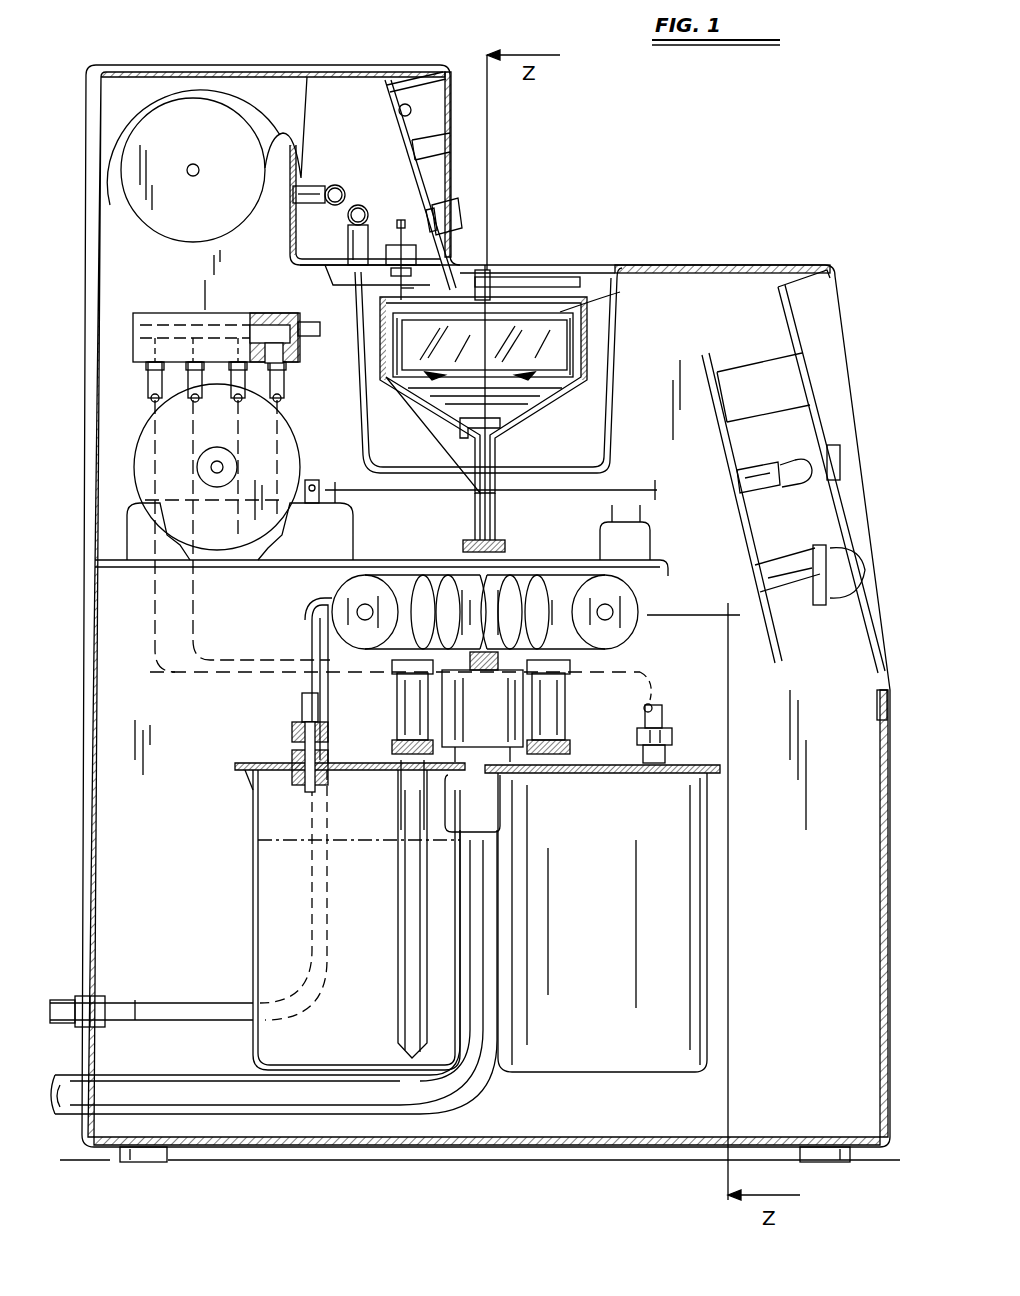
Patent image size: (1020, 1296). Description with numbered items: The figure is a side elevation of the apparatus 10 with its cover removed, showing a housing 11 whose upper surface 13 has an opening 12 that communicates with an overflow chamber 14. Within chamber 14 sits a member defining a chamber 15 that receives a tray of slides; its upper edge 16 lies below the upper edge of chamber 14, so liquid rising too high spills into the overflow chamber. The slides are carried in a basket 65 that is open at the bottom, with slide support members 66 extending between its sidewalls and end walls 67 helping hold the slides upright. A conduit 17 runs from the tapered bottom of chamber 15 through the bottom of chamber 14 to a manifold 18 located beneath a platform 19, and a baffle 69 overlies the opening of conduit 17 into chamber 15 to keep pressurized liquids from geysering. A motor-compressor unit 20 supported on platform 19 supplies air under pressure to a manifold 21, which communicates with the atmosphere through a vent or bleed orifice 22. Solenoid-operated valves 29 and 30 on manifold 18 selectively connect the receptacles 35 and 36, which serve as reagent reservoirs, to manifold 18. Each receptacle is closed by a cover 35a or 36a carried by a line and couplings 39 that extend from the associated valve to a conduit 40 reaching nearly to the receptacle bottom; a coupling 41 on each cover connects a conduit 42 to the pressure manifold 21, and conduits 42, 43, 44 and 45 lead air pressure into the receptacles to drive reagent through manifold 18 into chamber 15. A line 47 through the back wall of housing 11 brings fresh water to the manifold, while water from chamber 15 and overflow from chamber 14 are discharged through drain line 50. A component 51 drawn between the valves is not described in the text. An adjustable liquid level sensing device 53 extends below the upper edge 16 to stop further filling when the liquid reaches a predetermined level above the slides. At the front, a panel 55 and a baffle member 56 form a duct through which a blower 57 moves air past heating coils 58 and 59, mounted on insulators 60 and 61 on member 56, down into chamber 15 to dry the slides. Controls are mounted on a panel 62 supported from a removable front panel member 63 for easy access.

The apparatus 10 is at (662, 212).
The housing 11 is at (878, 860).
The opening 12 is at (592, 268).
The upper surface 13 is at (724, 266).
The overflow chamber 14 is at (603, 332).
The chamber 15 is at (545, 393).
The upper edge 16 is at (606, 296).
The conduit 17 is at (497, 462).
The manifold 18 is at (505, 556).
The platform 19 is at (392, 558).
The motor-compressor unit 20 is at (290, 447).
The manifold 21 is at (152, 315).
The vent or bleed orifice 22 is at (318, 335).
The valve 29 is at (612, 595).
The valve 30 is at (350, 583).
The receptacle 35 is at (683, 930).
The cover 35a is at (718, 768).
The receptacle 36 is at (252, 935).
The cover 36a is at (258, 775).
The line and couplings 39 is at (398, 732).
The conduit 40 is at (400, 912).
The coupling 41 is at (292, 738).
The conduit 42 is at (300, 712).
The conduit 43 is at (660, 708).
The conduit 44 is at (243, 400).
The conduit 45 is at (285, 398).
The line 47 is at (310, 648).
The drain line 50 is at (170, 1080).
The pump body 51 is at (488, 704).
The adjustable liquid level sensing device 53 is at (395, 283).
The panel 55 is at (425, 178).
The baffle member 56 is at (290, 243).
The blower 57 is at (232, 205).
The heating coil 58 is at (337, 185).
The heating coil 59 is at (362, 206).
The insulator 60 is at (315, 200).
The insulator 61 is at (352, 246).
The panel 62 is at (726, 445).
The removable front panel member 63 is at (804, 392).
The container or basket 65 is at (520, 280).
The slide support members 66 is at (510, 368).
The end walls 67 is at (575, 368).
The baffle 69 is at (465, 418).